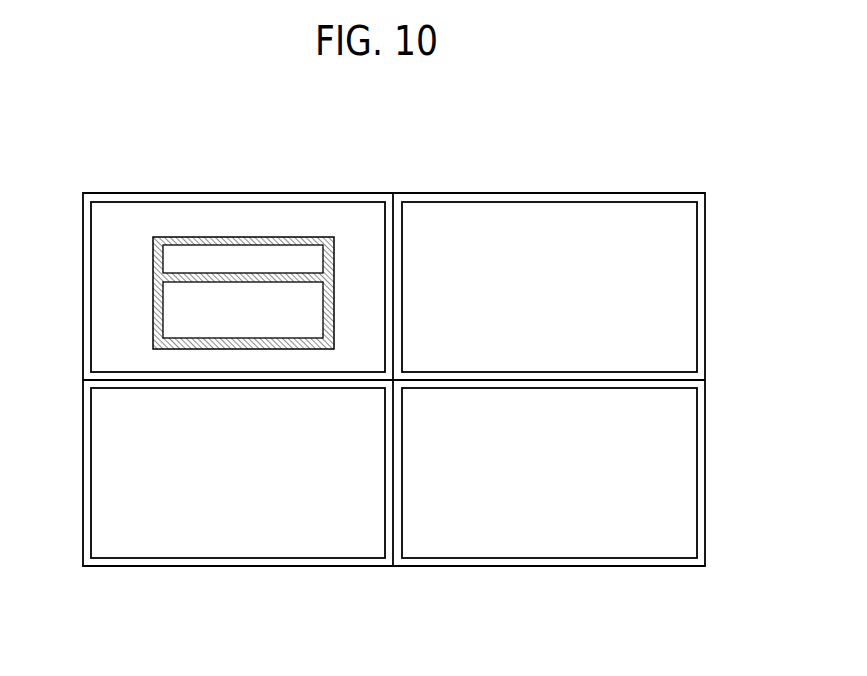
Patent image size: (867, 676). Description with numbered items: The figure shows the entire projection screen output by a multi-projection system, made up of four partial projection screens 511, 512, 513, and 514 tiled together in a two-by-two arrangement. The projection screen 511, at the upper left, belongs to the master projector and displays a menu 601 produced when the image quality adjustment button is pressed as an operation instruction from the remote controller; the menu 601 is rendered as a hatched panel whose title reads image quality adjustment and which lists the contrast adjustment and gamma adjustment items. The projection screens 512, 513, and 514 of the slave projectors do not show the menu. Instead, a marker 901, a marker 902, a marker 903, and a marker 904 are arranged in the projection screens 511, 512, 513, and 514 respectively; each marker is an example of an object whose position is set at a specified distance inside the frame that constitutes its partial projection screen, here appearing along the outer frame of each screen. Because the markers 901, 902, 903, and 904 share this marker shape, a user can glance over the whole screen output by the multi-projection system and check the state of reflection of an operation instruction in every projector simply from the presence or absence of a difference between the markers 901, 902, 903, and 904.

The projection screen 511 is at (162, 193).
The projection screen 512 is at (228, 558).
The projection screen 513 is at (553, 558).
The projection screen 514 is at (565, 193).
The menu 601 is at (255, 237).
The marker 901 is at (83, 284).
The marker 902 is at (83, 463).
The marker 903 is at (705, 462).
The marker 904 is at (705, 282).